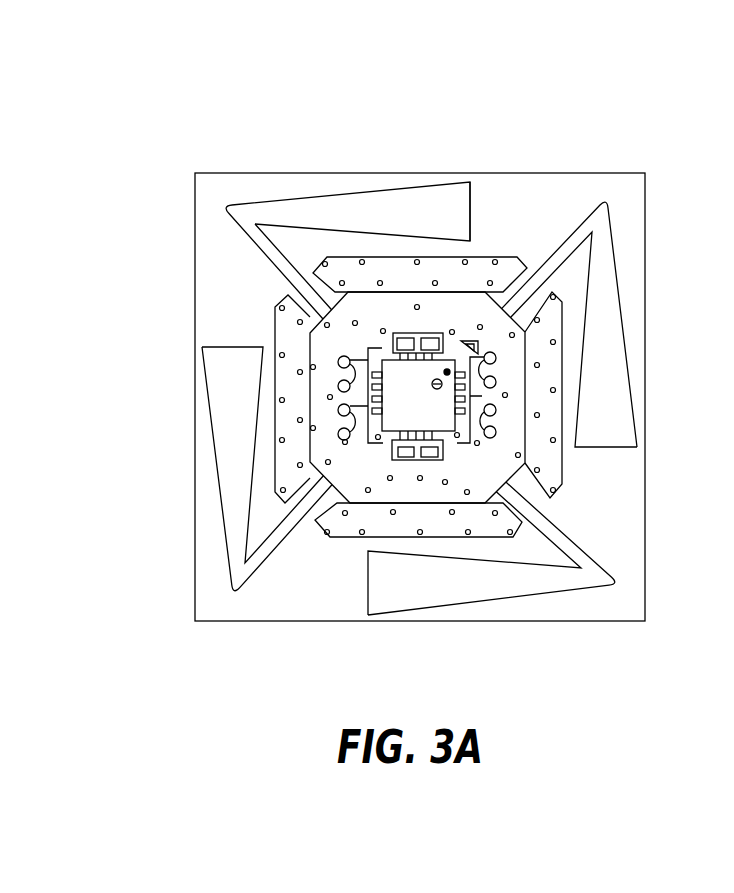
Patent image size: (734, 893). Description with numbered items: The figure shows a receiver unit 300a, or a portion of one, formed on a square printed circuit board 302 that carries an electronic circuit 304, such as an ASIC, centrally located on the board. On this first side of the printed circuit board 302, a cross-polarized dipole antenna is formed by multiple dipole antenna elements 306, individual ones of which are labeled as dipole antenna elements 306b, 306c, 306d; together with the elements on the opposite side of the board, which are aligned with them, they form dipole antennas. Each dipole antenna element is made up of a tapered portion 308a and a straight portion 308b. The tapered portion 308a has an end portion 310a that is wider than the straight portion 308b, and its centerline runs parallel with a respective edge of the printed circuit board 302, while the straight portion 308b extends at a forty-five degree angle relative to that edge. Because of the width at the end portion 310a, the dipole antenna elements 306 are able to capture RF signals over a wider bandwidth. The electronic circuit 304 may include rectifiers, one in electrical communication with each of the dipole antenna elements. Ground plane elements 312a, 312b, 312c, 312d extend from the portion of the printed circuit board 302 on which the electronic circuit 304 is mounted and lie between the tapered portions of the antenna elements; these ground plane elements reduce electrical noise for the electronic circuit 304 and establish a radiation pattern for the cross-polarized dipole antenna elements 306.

The receiver unit 300a is at (414, 34).
The printed circuit board 302 is at (222, 193).
The electronic circuit 304 is at (402, 393).
The dipole antenna elements 306 is at (511, 634).
The dipole antenna element 306b is at (661, 263).
The dipole antenna element 306c is at (303, 169).
The dipole antenna element 306d is at (201, 490).
The tapered portion 308a is at (431, 198).
The straight portion 308b is at (277, 243).
The end portion 310a is at (483, 202).
The ground plane element 312a is at (482, 268).
The ground plane element 312b is at (562, 477).
The ground plane element 312c is at (345, 538).
The ground plane element 312d is at (273, 330).